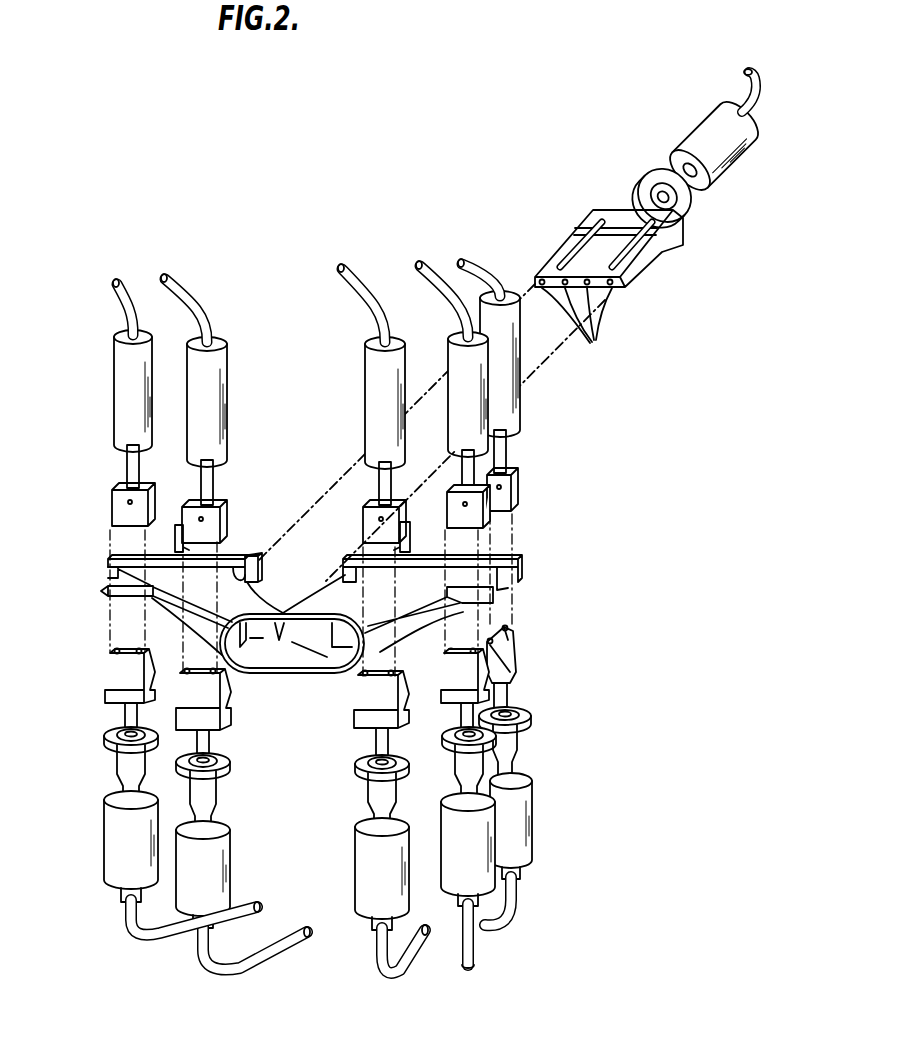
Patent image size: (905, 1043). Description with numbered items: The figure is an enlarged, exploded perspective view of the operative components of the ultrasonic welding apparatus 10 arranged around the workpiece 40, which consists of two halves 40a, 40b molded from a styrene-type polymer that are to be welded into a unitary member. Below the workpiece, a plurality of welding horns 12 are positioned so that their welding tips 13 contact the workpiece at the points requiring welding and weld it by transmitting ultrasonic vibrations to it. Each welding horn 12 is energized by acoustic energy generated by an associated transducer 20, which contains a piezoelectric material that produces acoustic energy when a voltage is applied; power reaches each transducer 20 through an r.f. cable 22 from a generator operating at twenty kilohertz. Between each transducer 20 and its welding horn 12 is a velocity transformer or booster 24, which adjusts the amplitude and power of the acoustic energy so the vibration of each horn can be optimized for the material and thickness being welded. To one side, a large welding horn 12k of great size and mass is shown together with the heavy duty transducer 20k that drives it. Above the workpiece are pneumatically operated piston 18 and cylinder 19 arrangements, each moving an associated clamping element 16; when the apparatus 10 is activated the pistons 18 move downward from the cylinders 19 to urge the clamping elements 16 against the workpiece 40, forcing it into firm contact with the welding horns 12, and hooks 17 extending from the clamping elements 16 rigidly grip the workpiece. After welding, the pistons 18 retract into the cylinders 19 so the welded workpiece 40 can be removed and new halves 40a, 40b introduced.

The ultrasonic welding apparatus 10 is at (301, 248).
The welding horn 12 is at (105, 666).
The large welding horn 12k is at (638, 254).
The welding tip 13 is at (596, 338).
The clamping element 16 is at (115, 518).
The hook 17 is at (179, 537).
The piston 18 is at (128, 460).
The cylinder 19 is at (123, 353).
The transducer 20 is at (118, 836).
The heavy duty transducer 20k is at (714, 132).
The r.f. cable 22 is at (746, 73).
The velocity transformer (booster) 24 is at (644, 176).
The workpiece 40 is at (545, 571).
The first workpiece half 40a is at (517, 563).
The second workpiece half 40b is at (505, 619).